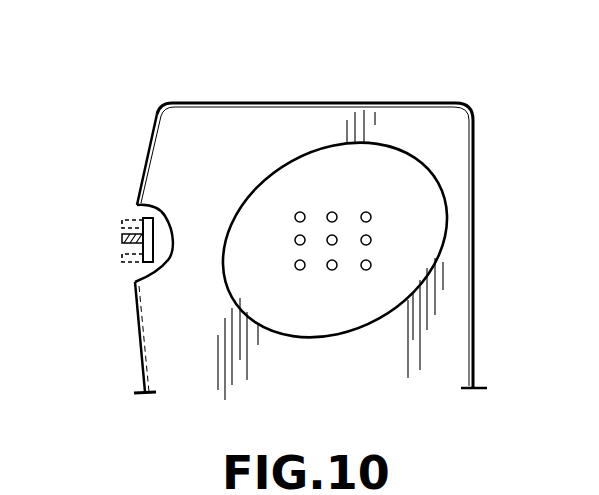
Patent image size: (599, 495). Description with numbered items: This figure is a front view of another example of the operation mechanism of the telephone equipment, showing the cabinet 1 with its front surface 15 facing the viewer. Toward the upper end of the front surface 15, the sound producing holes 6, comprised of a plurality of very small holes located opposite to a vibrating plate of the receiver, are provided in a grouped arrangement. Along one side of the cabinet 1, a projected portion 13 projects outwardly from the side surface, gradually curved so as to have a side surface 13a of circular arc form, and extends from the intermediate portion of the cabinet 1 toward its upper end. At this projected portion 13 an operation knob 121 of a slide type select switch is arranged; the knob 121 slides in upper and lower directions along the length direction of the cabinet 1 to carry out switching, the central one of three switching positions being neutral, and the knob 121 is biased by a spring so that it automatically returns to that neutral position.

The cabinet 1 is at (282, 96).
The sound producing holes 6 is at (437, 240).
The projected portion 13 is at (142, 340).
The side surface of the projected portion 13a is at (147, 152).
The front surface 15 is at (463, 143).
The operation knob 121 is at (122, 240).